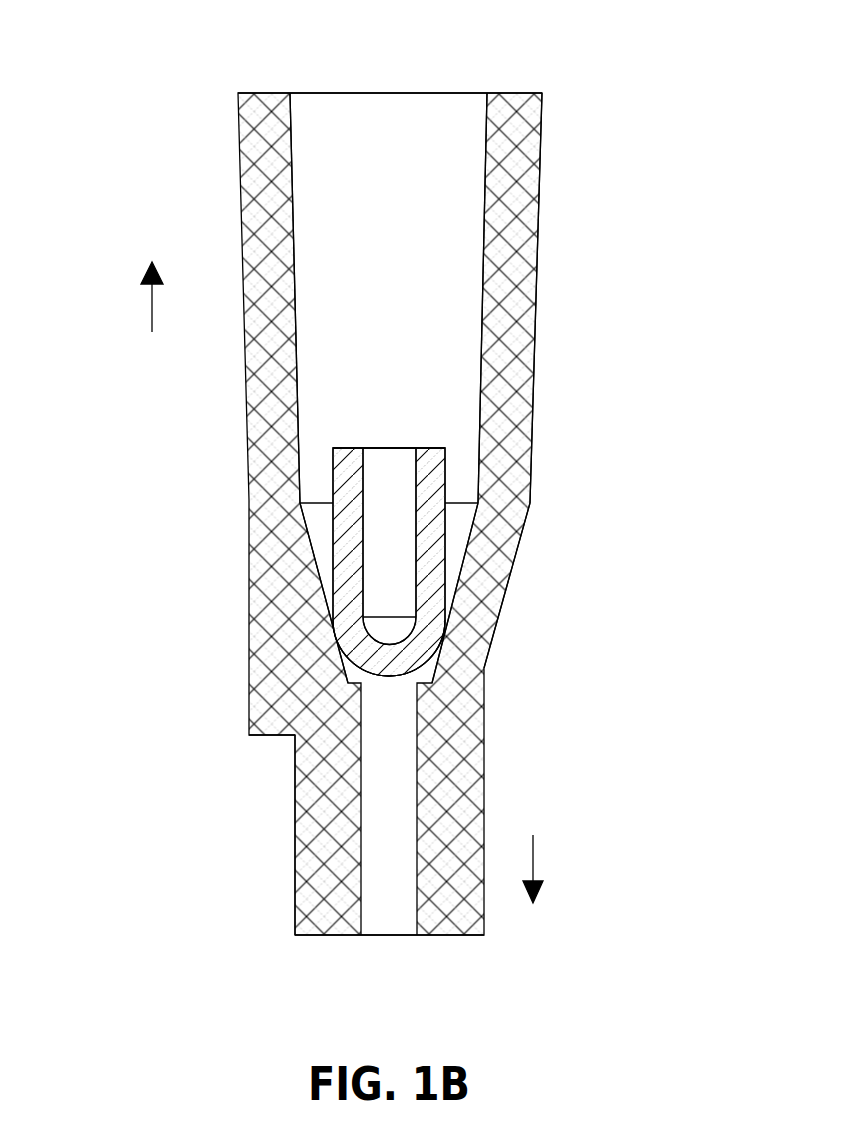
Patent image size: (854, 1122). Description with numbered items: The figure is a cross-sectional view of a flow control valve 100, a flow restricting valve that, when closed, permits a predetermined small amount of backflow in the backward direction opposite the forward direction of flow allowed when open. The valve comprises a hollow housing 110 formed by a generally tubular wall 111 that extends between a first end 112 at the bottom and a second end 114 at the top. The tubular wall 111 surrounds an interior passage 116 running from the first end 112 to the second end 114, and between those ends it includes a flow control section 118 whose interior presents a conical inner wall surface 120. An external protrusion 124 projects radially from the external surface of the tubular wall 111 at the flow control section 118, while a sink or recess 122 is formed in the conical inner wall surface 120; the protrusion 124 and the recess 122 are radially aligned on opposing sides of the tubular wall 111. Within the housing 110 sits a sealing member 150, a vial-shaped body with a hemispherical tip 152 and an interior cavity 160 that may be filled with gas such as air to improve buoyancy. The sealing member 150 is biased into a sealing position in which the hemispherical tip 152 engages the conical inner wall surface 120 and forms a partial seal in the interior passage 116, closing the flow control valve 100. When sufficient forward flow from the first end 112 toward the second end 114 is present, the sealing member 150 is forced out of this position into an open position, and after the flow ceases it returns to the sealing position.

The flow control valve 100 is at (655, 24).
The housing 110 is at (537, 240).
The tubular wall 111 is at (517, 188).
The first end 112 is at (478, 947).
The second end 114 is at (227, 102).
The interior passage 116 is at (417, 202).
The flow control section 118 is at (517, 556).
The conical inner wall surface 120 is at (443, 633).
The sink or recess 122 is at (333, 627).
The external protrusion 124 is at (248, 698).
The sealing member 150 is at (430, 448).
The hemispherical tip 152 is at (387, 658).
The interior cavity 160 is at (392, 488).